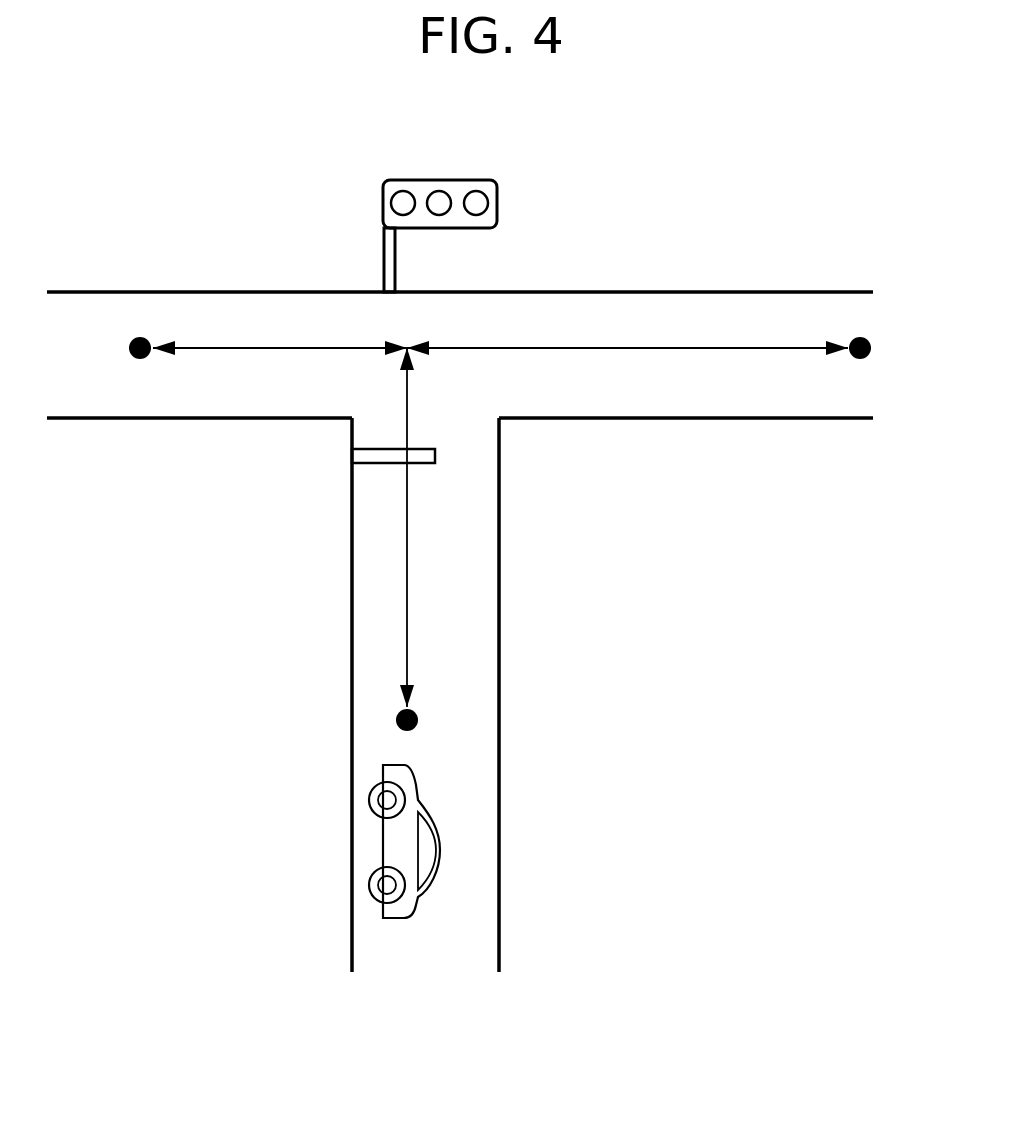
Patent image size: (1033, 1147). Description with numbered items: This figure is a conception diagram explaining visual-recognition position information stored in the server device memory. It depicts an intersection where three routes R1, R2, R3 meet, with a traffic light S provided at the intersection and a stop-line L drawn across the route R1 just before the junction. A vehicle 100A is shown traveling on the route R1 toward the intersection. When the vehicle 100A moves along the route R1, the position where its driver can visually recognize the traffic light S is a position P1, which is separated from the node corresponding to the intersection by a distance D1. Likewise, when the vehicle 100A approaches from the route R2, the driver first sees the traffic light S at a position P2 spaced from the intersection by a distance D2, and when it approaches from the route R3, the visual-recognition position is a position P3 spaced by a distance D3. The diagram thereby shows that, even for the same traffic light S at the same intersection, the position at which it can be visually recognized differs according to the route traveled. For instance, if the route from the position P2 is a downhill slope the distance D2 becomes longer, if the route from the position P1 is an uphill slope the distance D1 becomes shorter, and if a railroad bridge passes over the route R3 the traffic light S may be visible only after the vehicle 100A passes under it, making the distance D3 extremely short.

The traffic light S is at (459, 178).
The route R1 is at (501, 722).
The route R2 is at (670, 290).
The route R3 is at (248, 290).
The position P1 is at (419, 718).
The position P2 is at (872, 351).
The position P3 is at (130, 353).
The distance D1 is at (408, 556).
The distance D2 is at (648, 347).
The distance D3 is at (250, 344).
The stop-line L is at (358, 456).
The vehicle 100A is at (384, 850).